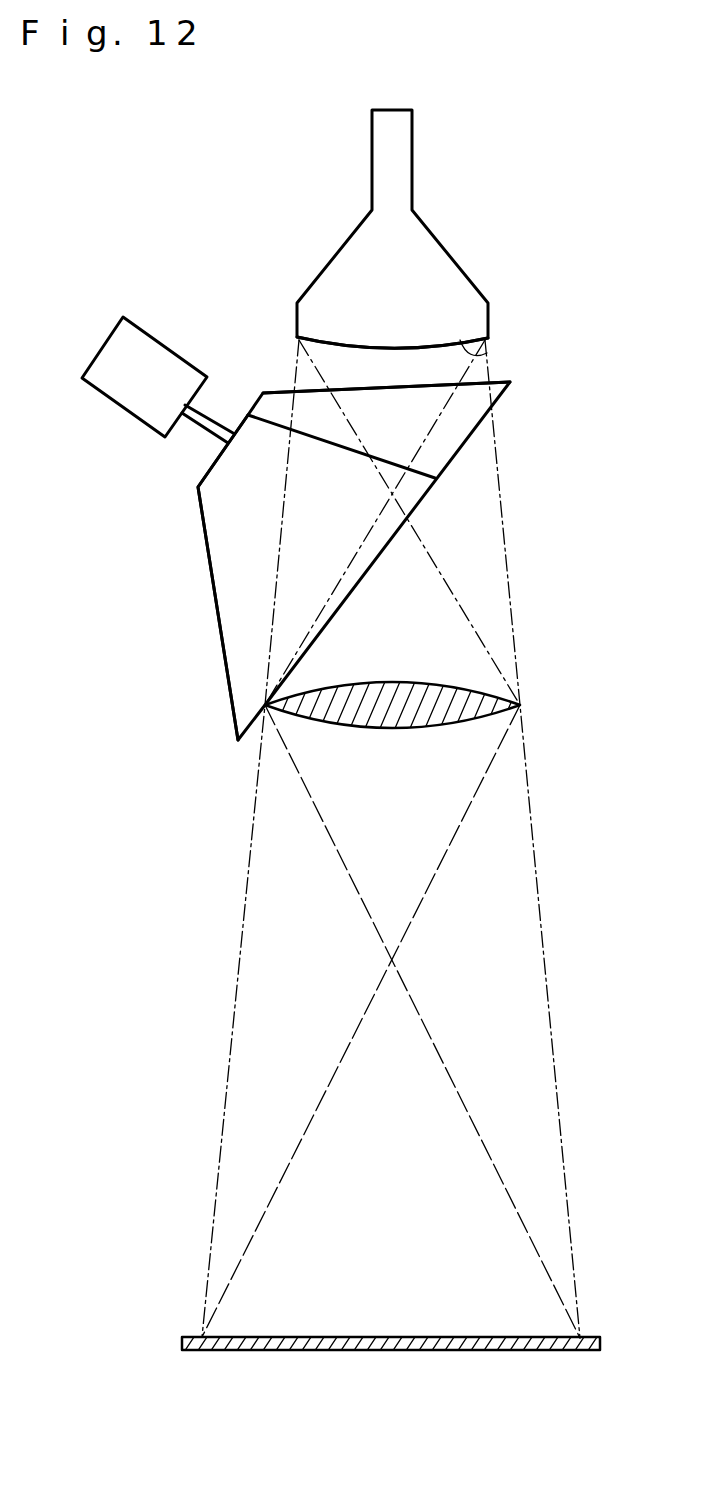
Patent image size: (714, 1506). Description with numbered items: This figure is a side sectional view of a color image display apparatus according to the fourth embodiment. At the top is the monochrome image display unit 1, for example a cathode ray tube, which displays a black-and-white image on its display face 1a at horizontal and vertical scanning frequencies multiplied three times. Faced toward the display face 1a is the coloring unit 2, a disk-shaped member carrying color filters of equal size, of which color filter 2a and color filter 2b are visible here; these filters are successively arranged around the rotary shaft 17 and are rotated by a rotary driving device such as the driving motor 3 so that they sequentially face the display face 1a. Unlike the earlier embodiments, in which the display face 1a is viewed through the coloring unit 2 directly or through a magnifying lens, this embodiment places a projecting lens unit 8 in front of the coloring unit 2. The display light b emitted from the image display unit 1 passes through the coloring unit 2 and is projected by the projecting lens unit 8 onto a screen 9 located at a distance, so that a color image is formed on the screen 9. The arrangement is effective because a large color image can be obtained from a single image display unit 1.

The image display unit 1 is at (436, 237).
The display face 1a is at (487, 353).
The coloring unit 2 is at (500, 396).
The color filter 2a is at (512, 384).
The color filter 2b is at (213, 568).
The driving motor 3 is at (157, 341).
The rotary shaft 17 is at (215, 428).
The projecting lens unit 8 is at (520, 705).
The screen 9 is at (598, 1338).
The display light b is at (537, 890).